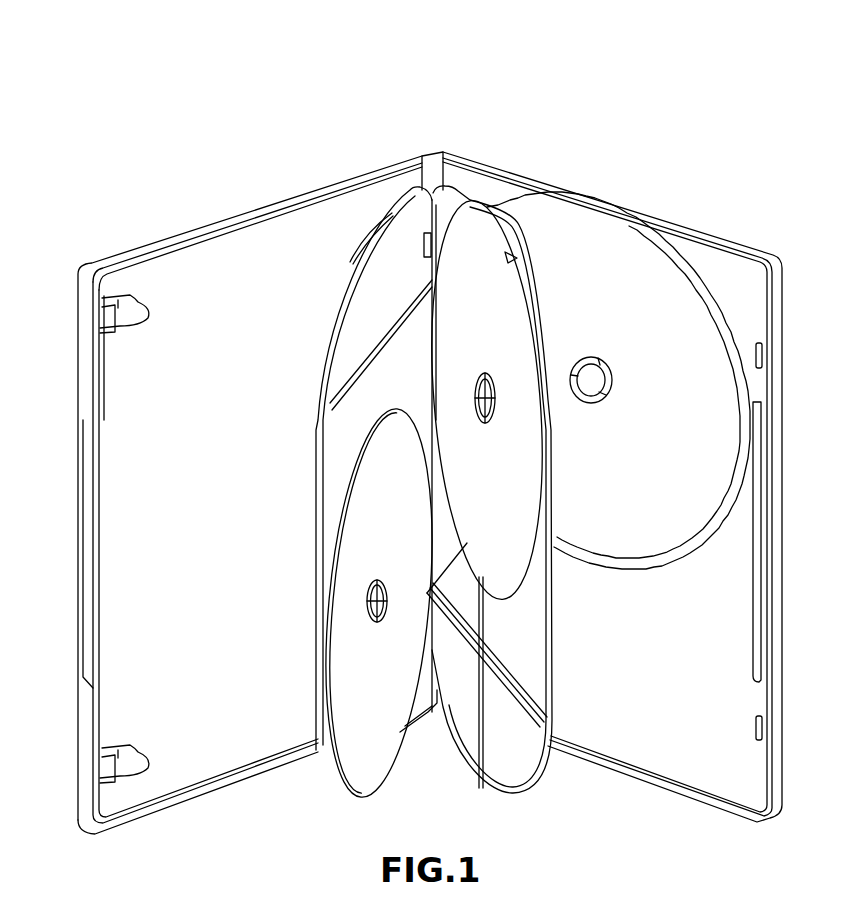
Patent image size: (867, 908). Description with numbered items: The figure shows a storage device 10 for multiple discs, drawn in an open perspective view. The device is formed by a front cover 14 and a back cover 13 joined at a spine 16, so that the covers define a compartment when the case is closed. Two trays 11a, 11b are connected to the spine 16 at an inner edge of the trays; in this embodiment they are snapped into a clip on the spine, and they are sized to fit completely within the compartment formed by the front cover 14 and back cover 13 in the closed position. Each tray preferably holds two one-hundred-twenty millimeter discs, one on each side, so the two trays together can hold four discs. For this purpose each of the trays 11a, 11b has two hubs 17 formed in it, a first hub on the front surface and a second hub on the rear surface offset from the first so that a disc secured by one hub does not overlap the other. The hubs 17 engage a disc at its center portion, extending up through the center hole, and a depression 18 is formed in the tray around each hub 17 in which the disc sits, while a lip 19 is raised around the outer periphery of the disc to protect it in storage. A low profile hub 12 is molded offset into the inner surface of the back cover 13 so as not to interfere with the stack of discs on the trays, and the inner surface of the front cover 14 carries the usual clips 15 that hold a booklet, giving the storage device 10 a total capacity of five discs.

The storage device 10 is at (646, 131).
The tray 11a is at (386, 250).
The tray 11b is at (470, 708).
The low profile hub 12 is at (583, 363).
The back cover 13 is at (693, 231).
The front cover 14 is at (152, 248).
The clips 15 is at (127, 313).
The spine 16 is at (434, 172).
The hubs 17 is at (536, 596).
The depression 18 is at (538, 432).
The lip 19 is at (437, 695).